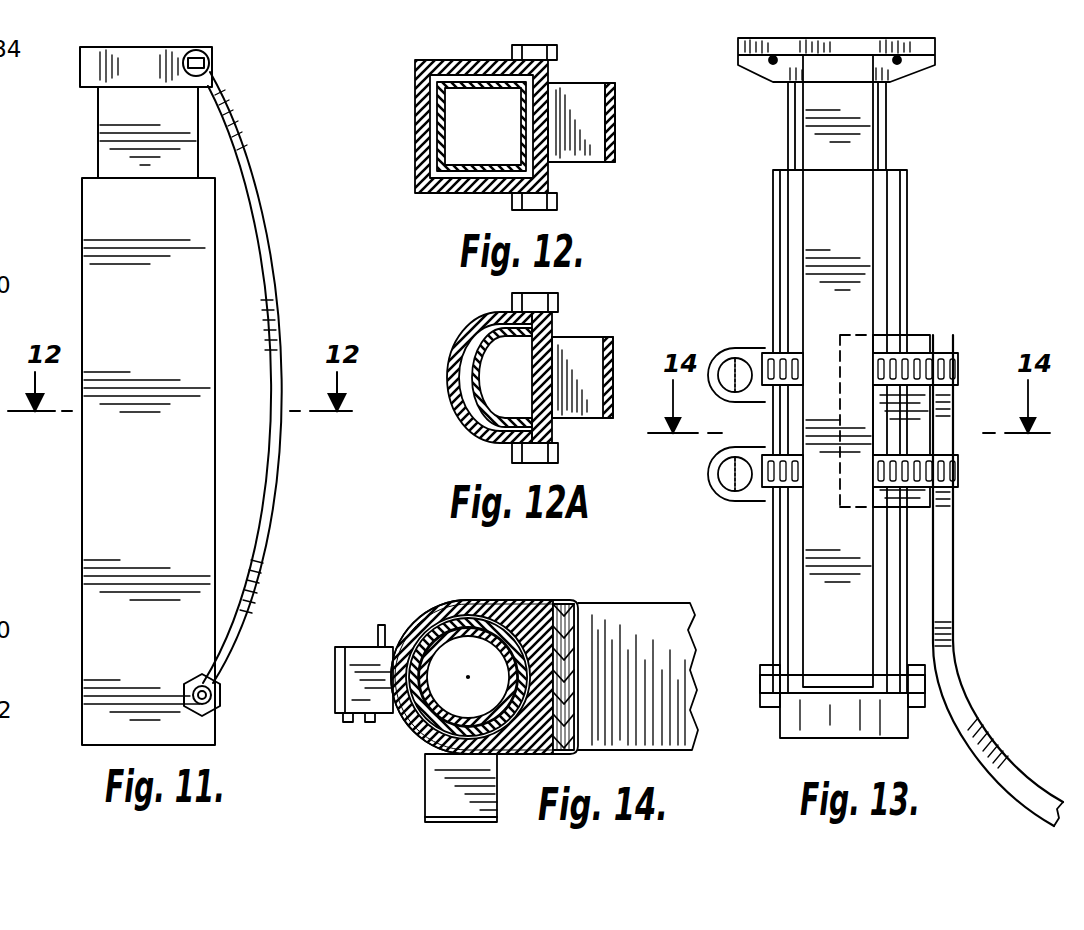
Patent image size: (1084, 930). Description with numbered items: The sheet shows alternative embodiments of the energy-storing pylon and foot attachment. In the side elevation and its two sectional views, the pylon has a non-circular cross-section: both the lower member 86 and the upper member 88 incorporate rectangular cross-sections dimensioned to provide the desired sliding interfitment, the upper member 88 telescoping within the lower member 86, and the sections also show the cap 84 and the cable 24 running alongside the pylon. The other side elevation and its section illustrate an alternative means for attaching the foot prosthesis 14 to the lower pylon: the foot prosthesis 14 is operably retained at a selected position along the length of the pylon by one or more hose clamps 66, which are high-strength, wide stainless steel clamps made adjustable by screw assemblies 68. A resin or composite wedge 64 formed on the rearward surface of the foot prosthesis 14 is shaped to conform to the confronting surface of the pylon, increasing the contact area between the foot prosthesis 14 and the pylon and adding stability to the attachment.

In FIG. 14, the foot prosthesis 14 is at (666, 600).
In FIG. 13, the foot prosthesis 14 is at (955, 632).
In FIG. 11, the tube / bumper post 24 is at (264, 523).
In FIG. 12, the tube / bumper post 24 is at (570, 83).
In FIG. 12A, the tube / bumper post 24 is at (582, 377).
In FIG. 14, the tube / bumper post 24 is at (425, 787).
In FIG. 13, the tube / bumper post 24 is at (860, 103).
In FIG. 14, the wedge 64 is at (535, 610).
In FIG. 13, the wedge 64 is at (918, 333).
In FIG. 14, the hose clamp 66 is at (429, 602).
In FIG. 13, the hose clamp 66 is at (950, 352).
In FIG. 14, the screw assembly 68 is at (356, 720).
In FIG. 13, the screw assembly 68 is at (735, 348).
In FIG. 11, the end cap 84 is at (146, 67).
In FIG. 11, the lower member 86 is at (98, 492).
In FIG. 12, the lower member 86 is at (457, 193).
In FIG. 12A, the lower member 86 is at (489, 377).
In FIG. 14, the lower member 86 is at (468, 677).
In FIG. 11, the upper member 88 is at (106, 146).
In FIG. 12, the upper member 88 is at (437, 135).
In FIG. 12A, the upper member 88 is at (502, 377).
In FIG. 14, the upper member 88 is at (468, 677).